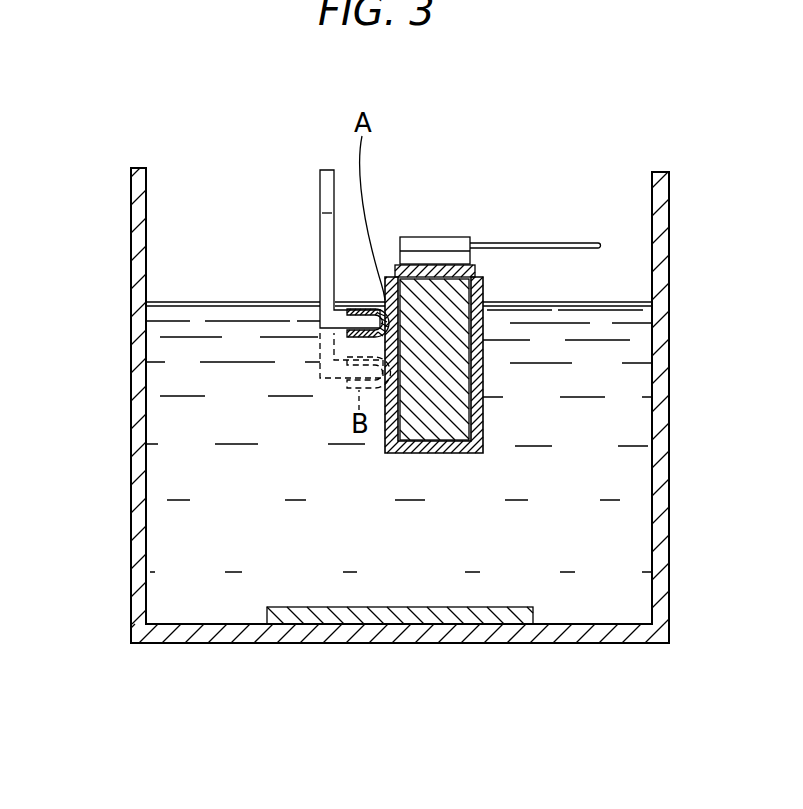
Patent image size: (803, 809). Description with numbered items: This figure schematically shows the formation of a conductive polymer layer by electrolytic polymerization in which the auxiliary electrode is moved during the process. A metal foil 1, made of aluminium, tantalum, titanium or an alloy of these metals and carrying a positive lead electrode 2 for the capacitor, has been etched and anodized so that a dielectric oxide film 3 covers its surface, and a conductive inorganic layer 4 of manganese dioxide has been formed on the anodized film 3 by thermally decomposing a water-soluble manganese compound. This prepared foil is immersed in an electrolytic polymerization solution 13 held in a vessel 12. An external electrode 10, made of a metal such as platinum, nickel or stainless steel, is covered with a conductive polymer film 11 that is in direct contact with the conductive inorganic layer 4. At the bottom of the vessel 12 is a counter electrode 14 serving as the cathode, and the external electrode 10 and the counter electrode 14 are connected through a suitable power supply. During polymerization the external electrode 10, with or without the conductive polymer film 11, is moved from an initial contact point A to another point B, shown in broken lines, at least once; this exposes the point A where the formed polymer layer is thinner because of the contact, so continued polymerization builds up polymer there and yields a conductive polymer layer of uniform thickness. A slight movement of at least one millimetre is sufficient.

The metal foil 1 is at (432, 256).
The positive lead electrode 2 is at (547, 243).
The dielectric oxide film 3 is at (392, 275).
The conductive inorganic layer 4 is at (483, 292).
The external electrode 10 is at (320, 230).
The conductive polymer film 11 is at (358, 308).
The vessel 12 is at (131, 523).
The electrolytic polymerization solution 13 is at (640, 532).
The counter electrode 14 is at (462, 612).